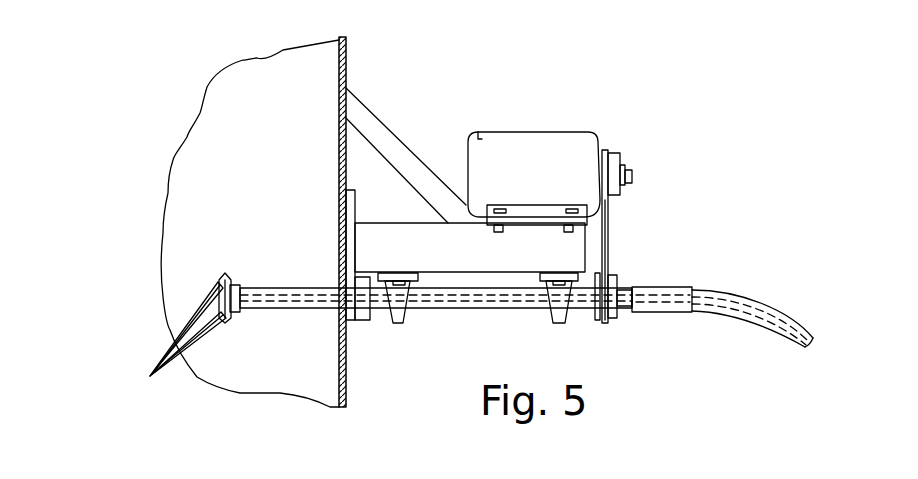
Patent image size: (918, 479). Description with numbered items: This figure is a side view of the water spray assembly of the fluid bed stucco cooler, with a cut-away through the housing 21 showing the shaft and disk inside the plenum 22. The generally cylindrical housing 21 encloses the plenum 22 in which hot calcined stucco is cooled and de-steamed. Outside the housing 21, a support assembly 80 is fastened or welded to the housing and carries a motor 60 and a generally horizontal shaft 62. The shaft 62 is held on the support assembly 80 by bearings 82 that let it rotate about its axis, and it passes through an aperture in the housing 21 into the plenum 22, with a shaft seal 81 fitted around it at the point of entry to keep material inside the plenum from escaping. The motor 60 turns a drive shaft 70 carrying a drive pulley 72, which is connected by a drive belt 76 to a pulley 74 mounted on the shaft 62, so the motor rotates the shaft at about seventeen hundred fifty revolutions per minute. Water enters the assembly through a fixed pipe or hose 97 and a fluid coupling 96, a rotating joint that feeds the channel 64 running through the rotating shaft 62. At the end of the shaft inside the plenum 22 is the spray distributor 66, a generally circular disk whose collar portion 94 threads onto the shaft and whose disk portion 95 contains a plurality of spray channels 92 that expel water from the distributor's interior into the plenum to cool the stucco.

The housing 21 is at (347, 47).
The plenum 22 is at (210, 162).
The motor 60 is at (547, 133).
The shaft 62 is at (458, 310).
The channel 64 is at (500, 297).
The spray distributor 66 is at (205, 293).
The drive shaft 70 is at (633, 175).
The drive pulley 72 is at (607, 150).
The pulley 74 is at (620, 280).
The drive belt 76 is at (580, 242).
The support assembly 80 is at (605, 245).
The shaft seal 81 is at (363, 323).
The bearings 82 is at (398, 323).
The spray channels 92 is at (177, 347).
The collar portion 94 is at (237, 313).
The disk portion 95 is at (232, 283).
The fluid coupling 96 is at (670, 312).
The hose 97 is at (772, 307).